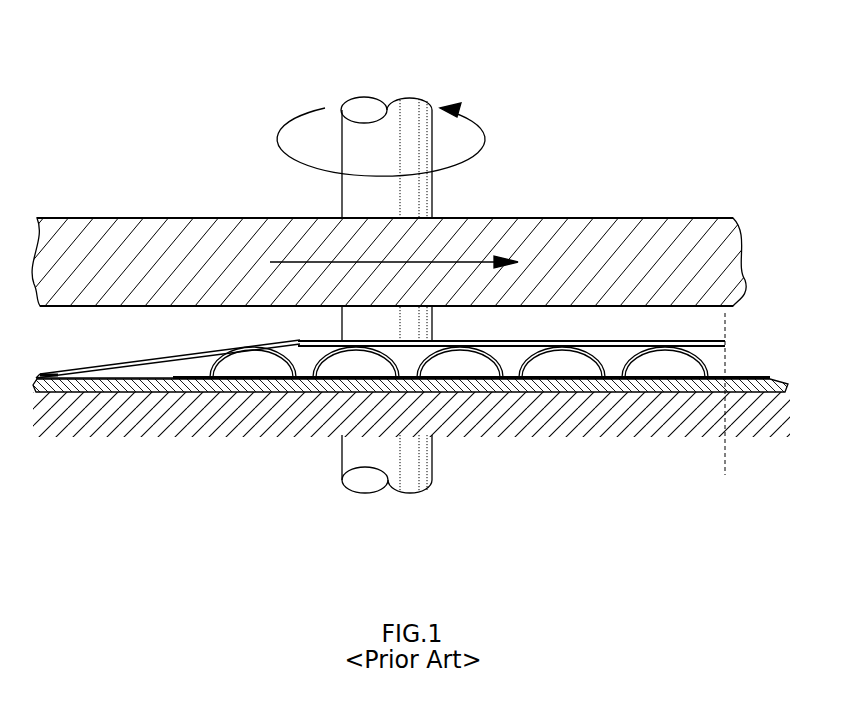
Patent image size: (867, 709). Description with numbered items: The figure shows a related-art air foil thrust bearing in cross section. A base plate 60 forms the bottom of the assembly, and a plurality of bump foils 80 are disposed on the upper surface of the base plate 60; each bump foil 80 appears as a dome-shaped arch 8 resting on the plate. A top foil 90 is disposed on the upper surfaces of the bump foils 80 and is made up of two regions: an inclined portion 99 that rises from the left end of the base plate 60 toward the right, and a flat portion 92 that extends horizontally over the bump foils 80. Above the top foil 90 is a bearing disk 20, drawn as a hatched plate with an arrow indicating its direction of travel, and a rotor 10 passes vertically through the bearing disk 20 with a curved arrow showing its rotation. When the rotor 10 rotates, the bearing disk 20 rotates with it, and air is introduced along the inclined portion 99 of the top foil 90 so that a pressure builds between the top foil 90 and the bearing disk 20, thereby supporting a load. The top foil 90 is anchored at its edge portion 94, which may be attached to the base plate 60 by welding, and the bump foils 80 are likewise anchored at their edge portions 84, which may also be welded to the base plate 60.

The rotor 10 is at (362, 107).
The bearing disk 20 is at (731, 230).
The dome-shaped protrusion 8 is at (256, 348).
The flat portion 92 is at (512, 345).
The top foil 90 is at (708, 341).
The bump foils 80 is at (702, 363).
The edge portions of the bump foils 84 is at (758, 374).
The base plate 60 is at (583, 386).
The inclined portion 99 is at (163, 357).
The edge portion of the top foil 94 is at (60, 373).